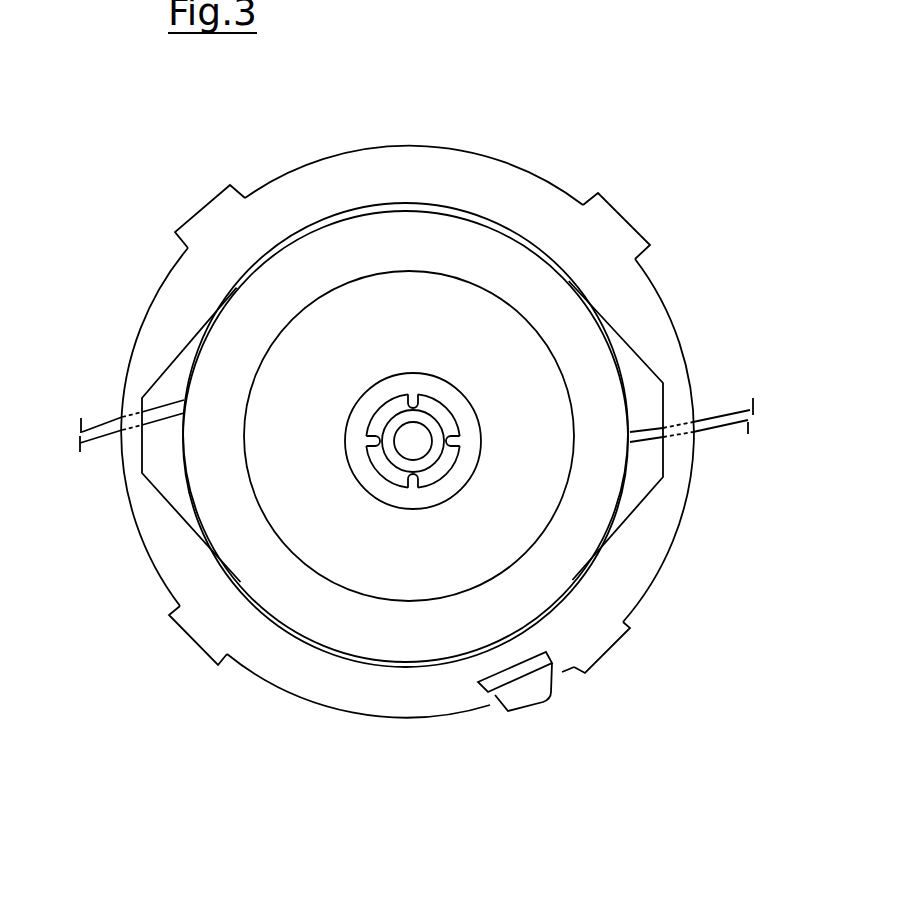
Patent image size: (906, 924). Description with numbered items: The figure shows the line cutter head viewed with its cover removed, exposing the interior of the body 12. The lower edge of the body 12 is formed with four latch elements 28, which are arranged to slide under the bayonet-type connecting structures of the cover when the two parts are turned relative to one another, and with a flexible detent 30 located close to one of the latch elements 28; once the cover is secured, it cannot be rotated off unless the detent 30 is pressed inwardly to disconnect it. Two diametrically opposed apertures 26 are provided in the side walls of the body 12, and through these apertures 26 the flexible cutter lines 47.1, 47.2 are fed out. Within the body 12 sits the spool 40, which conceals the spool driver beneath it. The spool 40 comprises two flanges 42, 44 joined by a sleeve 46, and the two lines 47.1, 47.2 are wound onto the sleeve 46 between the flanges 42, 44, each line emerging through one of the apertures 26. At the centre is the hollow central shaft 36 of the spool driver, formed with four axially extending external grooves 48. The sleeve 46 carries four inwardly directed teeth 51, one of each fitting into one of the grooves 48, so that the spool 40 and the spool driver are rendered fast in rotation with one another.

The body 12 is at (652, 593).
The apertures 26 is at (127, 436).
The latch elements 28 is at (210, 220).
The flexible detent 30 is at (528, 697).
The hollow central shaft 36 is at (410, 322).
The spool 40 is at (402, 356).
The flange 42 is at (502, 243).
The flange 44 is at (371, 287).
The sleeve 46 is at (373, 390).
The line 47.1 is at (98, 428).
The line 47.2 is at (723, 425).
The grooves 48 is at (420, 398).
The teeth 51 is at (412, 403).